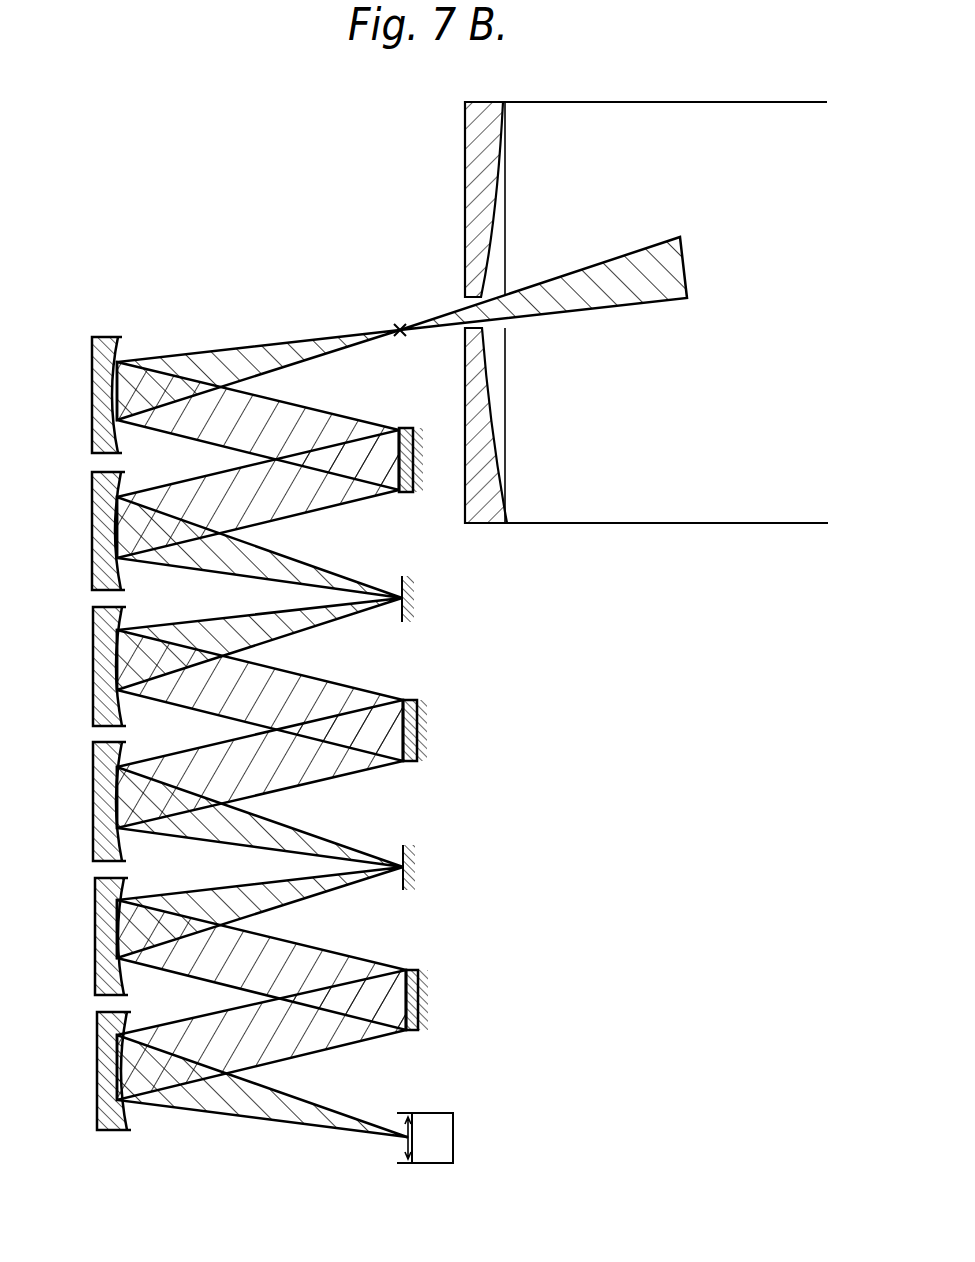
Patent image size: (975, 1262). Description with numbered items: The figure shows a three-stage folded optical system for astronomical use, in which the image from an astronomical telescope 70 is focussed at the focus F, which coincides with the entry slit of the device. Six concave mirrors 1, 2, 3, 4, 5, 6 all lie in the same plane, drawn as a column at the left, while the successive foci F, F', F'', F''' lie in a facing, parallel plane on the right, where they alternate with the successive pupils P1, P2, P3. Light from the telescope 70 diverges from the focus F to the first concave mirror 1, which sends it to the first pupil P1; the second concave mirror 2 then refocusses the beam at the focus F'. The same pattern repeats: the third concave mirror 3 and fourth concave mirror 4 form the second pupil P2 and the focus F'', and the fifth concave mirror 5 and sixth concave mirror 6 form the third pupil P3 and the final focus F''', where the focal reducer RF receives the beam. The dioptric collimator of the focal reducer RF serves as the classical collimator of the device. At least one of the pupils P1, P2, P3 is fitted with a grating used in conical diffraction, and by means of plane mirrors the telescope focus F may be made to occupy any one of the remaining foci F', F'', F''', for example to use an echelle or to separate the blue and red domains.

The concave mirror 1 is at (470, 176).
The concave mirror 2 is at (96, 530).
The concave mirror 3 is at (98, 690).
The concave mirror 4 is at (99, 802).
The concave mirror 5 is at (100, 915).
The concave mirror 6 is at (102, 1072).
The astronomical telescope 70 is at (674, 457).
The focus F is at (399, 314).
The pupil P1 is at (388, 455).
The focus F' is at (398, 584).
The pupil P2 is at (388, 725).
The focus F'' is at (399, 855).
The pupil P3 is at (393, 1003).
The focus F''' is at (365, 1166).
The focal reducer RF is at (453, 1135).